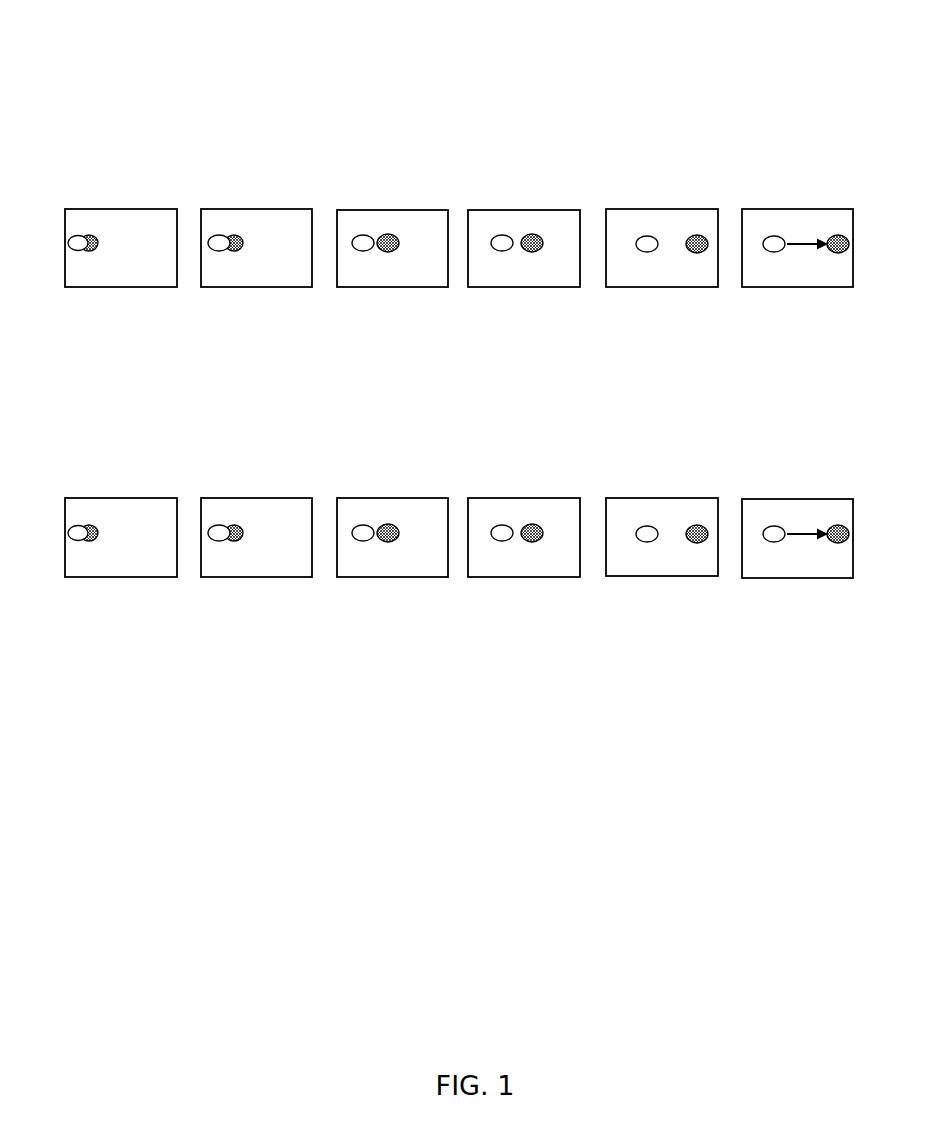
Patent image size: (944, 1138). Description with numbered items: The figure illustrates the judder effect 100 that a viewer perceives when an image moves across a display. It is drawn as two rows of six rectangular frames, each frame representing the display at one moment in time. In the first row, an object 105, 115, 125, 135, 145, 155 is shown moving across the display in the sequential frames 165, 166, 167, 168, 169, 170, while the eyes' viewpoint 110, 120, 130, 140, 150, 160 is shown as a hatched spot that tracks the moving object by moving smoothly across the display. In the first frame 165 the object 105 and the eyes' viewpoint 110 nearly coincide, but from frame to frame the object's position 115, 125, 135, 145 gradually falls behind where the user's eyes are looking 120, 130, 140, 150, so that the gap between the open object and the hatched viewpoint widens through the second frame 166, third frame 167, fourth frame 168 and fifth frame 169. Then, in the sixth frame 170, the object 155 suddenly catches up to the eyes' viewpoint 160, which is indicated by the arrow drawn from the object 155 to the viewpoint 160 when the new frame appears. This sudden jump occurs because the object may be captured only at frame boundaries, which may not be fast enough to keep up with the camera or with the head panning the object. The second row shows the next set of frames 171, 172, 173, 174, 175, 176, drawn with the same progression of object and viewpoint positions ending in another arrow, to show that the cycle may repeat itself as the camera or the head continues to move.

The judder effect 100 is at (432, 50).
The object 105 is at (74, 251).
The eyes' viewpoint 110 is at (83, 251).
The object 115 is at (212, 252).
The eyes' viewpoint 120 is at (240, 252).
The object 125 is at (360, 252).
The eyes' viewpoint 130 is at (390, 252).
The object 135 is at (500, 252).
The eyes' viewpoint 140 is at (533, 252).
The object 145 is at (645, 252).
The eyes' viewpoint 150 is at (697, 253).
The object 155 is at (775, 252).
The eyes' viewpoint 160 is at (838, 253).
The frame 1 165 is at (101, 232).
The frame 2 166 is at (235, 232).
The frame 3 167 is at (371, 232).
The frame 4 168 is at (503, 232).
The frame 5 169 is at (641, 232).
The frame 6 170 is at (776, 232).
The frame 7 171 is at (100, 518).
The frame 8 172 is at (235, 518).
The frame 9 173 is at (370, 518).
The frame 10 174 is at (505, 518).
The frame 11 175 is at (641, 518).
The frame 12 176 is at (776, 518).